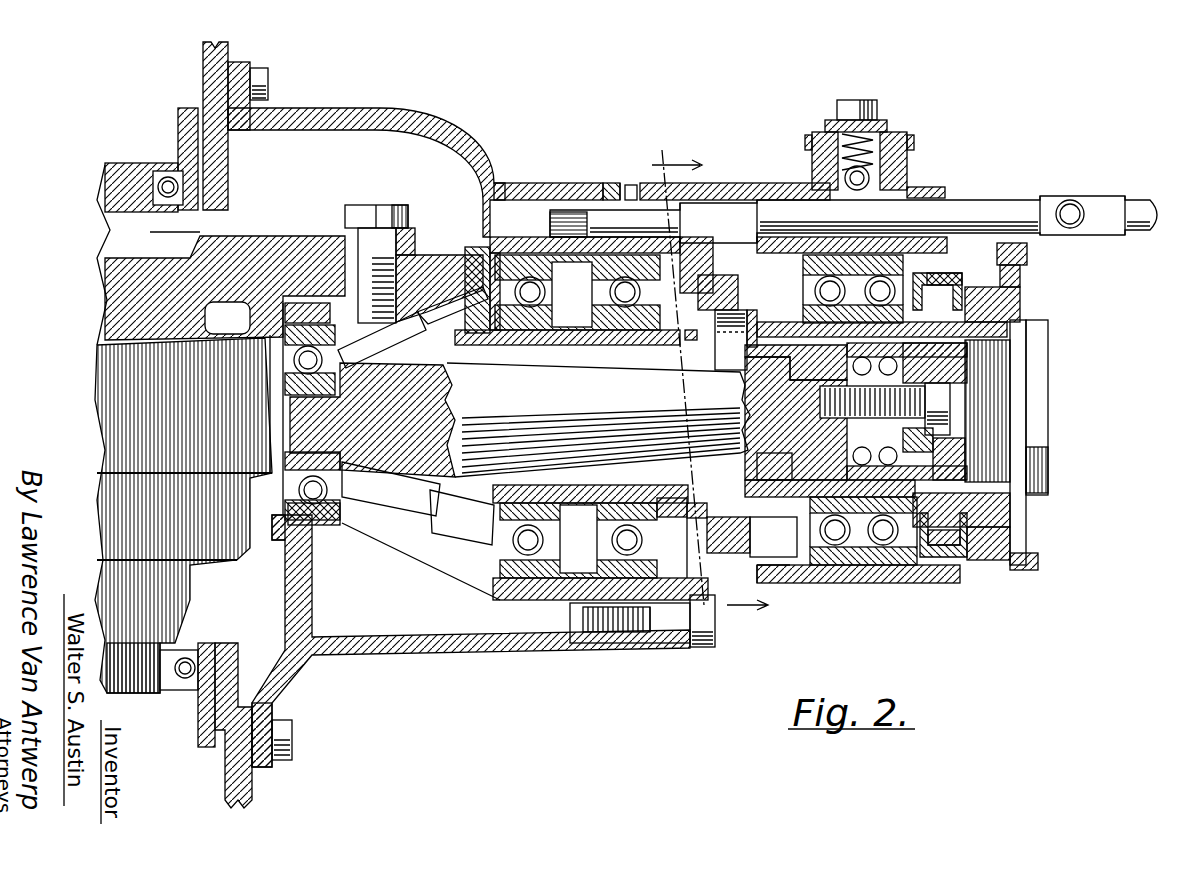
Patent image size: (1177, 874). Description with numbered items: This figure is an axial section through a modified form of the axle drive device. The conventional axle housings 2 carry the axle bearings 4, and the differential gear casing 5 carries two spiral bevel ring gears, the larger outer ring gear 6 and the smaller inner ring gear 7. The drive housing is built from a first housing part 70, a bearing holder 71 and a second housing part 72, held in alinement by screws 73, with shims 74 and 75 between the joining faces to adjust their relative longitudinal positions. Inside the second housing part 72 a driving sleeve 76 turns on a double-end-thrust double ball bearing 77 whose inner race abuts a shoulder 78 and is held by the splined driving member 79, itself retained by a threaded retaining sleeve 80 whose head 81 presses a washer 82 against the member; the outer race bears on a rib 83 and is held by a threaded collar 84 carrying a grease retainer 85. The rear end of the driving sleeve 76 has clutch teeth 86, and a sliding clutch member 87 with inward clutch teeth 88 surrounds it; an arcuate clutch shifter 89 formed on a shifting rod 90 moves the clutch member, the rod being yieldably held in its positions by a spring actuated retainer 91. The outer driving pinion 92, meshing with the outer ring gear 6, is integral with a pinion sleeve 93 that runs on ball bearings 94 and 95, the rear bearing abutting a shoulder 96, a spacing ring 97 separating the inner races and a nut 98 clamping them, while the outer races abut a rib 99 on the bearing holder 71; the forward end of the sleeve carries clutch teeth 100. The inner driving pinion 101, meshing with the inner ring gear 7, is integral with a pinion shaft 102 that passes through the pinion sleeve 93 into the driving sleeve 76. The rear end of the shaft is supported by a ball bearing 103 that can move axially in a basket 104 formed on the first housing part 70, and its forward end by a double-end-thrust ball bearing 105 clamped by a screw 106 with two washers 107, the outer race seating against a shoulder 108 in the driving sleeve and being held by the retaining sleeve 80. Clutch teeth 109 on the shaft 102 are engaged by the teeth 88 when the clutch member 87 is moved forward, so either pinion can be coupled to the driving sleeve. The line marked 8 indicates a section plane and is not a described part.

The axle housing 2 is at (205, 78).
The axle bearing 4 is at (165, 185).
The differential gear casing 5 is at (120, 405).
The outer ring gear 6 is at (440, 268).
The inner ring gear 7 is at (400, 300).
The section line 8 is at (710, 389).
The first housing part 70 is at (440, 125).
The bearing holder 71 is at (615, 185).
The second housing part 72 is at (738, 183).
The screws 73 is at (700, 640).
The shim 74 is at (606, 190).
The shim 75 is at (632, 185).
The driving sleeve 76 is at (975, 530).
The double ball bearing 77 is at (880, 550).
The shoulder 78 is at (813, 305).
The driving member 79 is at (1005, 292).
The threaded retaining sleeve 80 is at (990, 395).
The head 81 is at (1032, 392).
The washer 82 is at (1014, 312).
The rib 83 is at (790, 583).
The threaded collar 84 is at (950, 562).
The grease retainer 85 is at (940, 290).
The clutch teeth 86 is at (770, 497).
The sliding clutch member 87 is at (760, 568).
The clutch teeth 88 is at (731, 340).
The arcuate clutch shifter 89 is at (740, 267).
The shifting rod 90 is at (988, 210).
The spring actuated retainer 91 is at (898, 180).
The outer driving pinion 92 is at (470, 532).
The pinion sleeve 93 is at (580, 493).
The ball bearing 94 is at (512, 290).
The ball bearing 95 is at (612, 296).
The shoulder 96 is at (508, 343).
The spacing ring 97 is at (592, 520).
The nut 98 is at (665, 515).
The rib 99 is at (540, 290).
The clutch teeth 100 is at (690, 342).
The inner driving pinion 101 is at (385, 488).
The pinion shaft 102 is at (520, 420).
The ball bearing 103 is at (350, 530).
The basket 104 is at (290, 620).
The ball bearing 105 is at (852, 456).
The screw 106 is at (935, 392).
The washers 107 is at (925, 442).
The shoulder 108 is at (852, 362).
The clutch teeth 109 is at (775, 466).